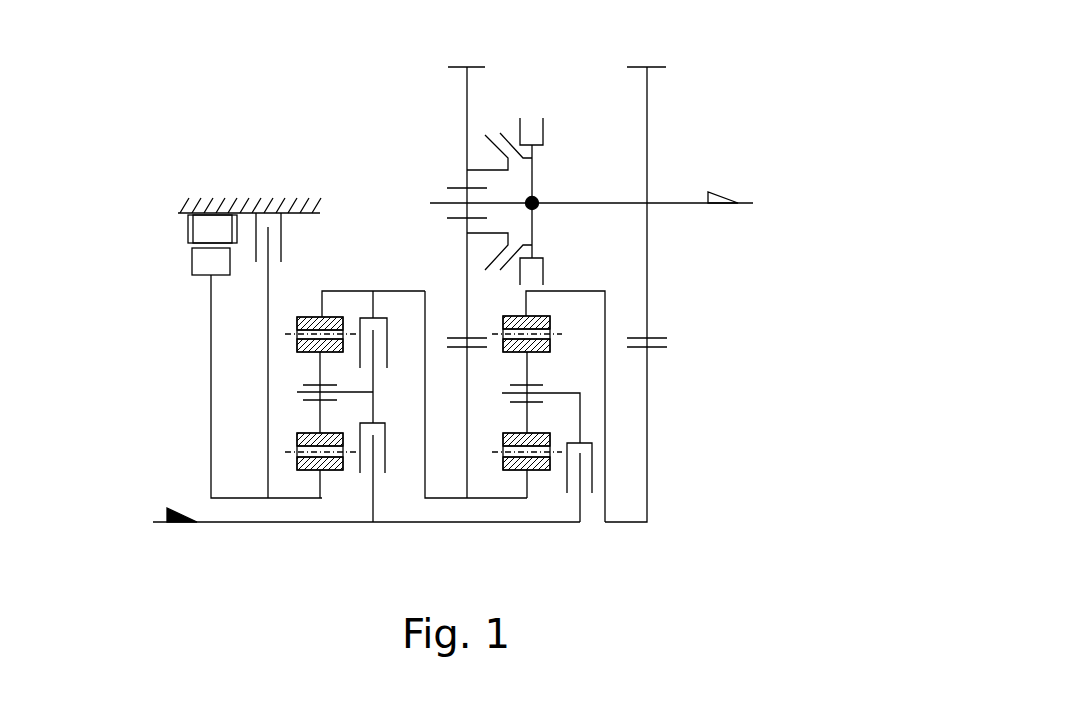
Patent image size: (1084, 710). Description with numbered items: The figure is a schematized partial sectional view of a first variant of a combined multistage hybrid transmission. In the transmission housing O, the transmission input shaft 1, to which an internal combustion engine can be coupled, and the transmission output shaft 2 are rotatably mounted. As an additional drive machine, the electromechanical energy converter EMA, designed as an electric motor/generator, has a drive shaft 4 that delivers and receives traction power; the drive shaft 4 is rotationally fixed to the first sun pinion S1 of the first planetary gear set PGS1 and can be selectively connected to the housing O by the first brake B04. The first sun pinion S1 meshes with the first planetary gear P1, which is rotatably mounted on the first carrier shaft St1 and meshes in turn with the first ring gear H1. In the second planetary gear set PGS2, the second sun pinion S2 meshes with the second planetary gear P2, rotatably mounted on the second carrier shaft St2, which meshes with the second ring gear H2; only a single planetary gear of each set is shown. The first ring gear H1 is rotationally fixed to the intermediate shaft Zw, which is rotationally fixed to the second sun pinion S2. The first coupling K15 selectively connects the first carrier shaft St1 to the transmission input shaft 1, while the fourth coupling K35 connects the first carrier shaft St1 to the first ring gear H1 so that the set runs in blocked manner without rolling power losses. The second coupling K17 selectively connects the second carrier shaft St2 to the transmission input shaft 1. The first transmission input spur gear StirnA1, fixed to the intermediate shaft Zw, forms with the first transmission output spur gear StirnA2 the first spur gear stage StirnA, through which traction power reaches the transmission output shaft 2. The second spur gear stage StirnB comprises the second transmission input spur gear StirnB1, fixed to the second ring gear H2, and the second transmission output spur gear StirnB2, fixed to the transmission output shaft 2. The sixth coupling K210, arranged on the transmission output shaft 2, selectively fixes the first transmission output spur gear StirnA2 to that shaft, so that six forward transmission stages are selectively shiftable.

The transmission input shaft 1 is at (160, 521).
The transmission output shaft 2 is at (745, 203).
The drive shaft 4 is at (210, 322).
The transmission housing O is at (238, 212).
The electromechanical energy converter EMA is at (188, 242).
The first brake B04 is at (283, 232).
The first ring gear H1 is at (307, 316).
The first carrier shaft St1 is at (300, 391).
The first planetary gear P1 is at (320, 412).
The first sun pinion S1 is at (330, 472).
The first planetary gear set PGS1 is at (352, 535).
The fourth coupling K35 is at (377, 318).
The first coupling K15 is at (392, 455).
The intermediate shaft Zw is at (427, 300).
The first spur gear stage StirnA is at (455, 127).
The first transmission input spur gear StirnA1 is at (467, 460).
The first transmission output spur gear StirnA2 is at (465, 84).
The sixth coupling K210 is at (503, 130).
The second spur gear stage StirnB is at (653, 192).
The second transmission input spur gear StirnB1 is at (668, 348).
The second transmission output spur gear StirnB2 is at (650, 82).
The second planetary gear set PGS2 is at (537, 478).
The second ring gear H2 is at (550, 325).
The second carrier shaft St2 is at (580, 402).
The second planetary gear P2 is at (527, 408).
The second sun pinion S2 is at (553, 470).
The second coupling K17 is at (592, 467).